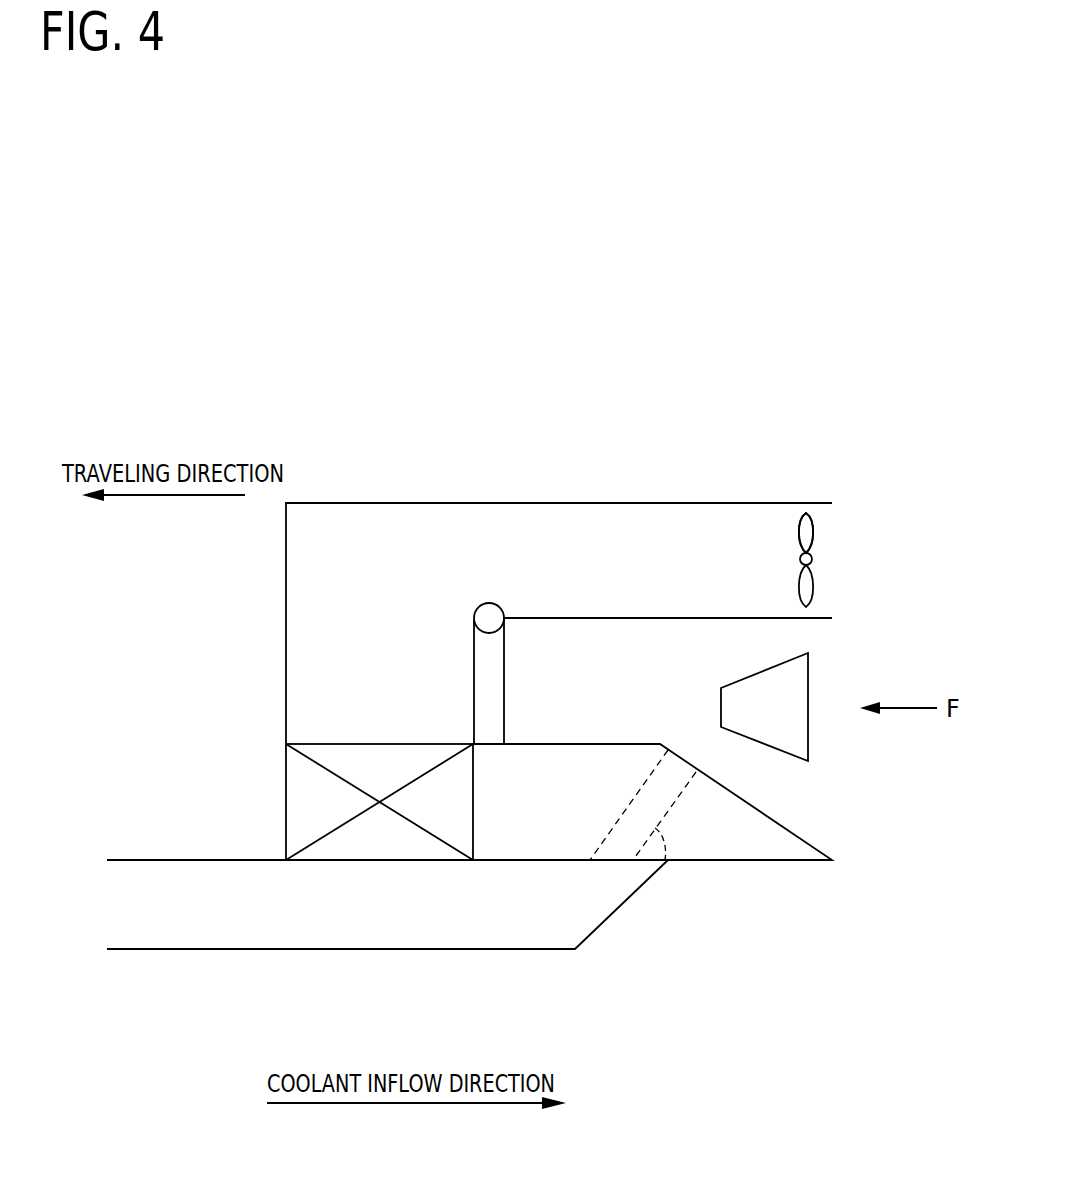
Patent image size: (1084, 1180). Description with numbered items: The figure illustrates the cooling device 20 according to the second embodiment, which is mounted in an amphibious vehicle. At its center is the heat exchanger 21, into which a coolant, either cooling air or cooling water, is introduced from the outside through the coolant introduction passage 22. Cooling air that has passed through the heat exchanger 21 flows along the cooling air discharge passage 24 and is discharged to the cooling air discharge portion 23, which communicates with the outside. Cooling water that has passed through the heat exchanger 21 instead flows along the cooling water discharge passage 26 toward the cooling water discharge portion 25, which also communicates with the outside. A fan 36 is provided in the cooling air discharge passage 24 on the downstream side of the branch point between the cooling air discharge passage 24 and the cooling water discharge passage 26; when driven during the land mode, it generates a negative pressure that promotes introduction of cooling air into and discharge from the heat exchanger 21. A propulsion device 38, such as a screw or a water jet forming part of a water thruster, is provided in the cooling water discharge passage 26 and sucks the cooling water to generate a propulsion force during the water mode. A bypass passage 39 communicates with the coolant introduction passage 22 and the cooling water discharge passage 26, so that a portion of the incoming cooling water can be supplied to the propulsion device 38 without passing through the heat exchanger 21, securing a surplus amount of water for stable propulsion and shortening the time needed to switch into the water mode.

The cooling device 20 is at (318, 467).
The heat exchanger 21 is at (312, 794).
The coolant introduction passage 22 is at (218, 952).
The cooling air discharge portion 23 is at (836, 562).
The cooling air discharge passage 24 is at (683, 502).
The cooling water discharge portion 25 is at (826, 792).
The cooling water discharge passage 26 is at (733, 792).
The fan 36 is at (806, 513).
The propulsion device 38 is at (808, 682).
The bypass passage 39 is at (668, 862).